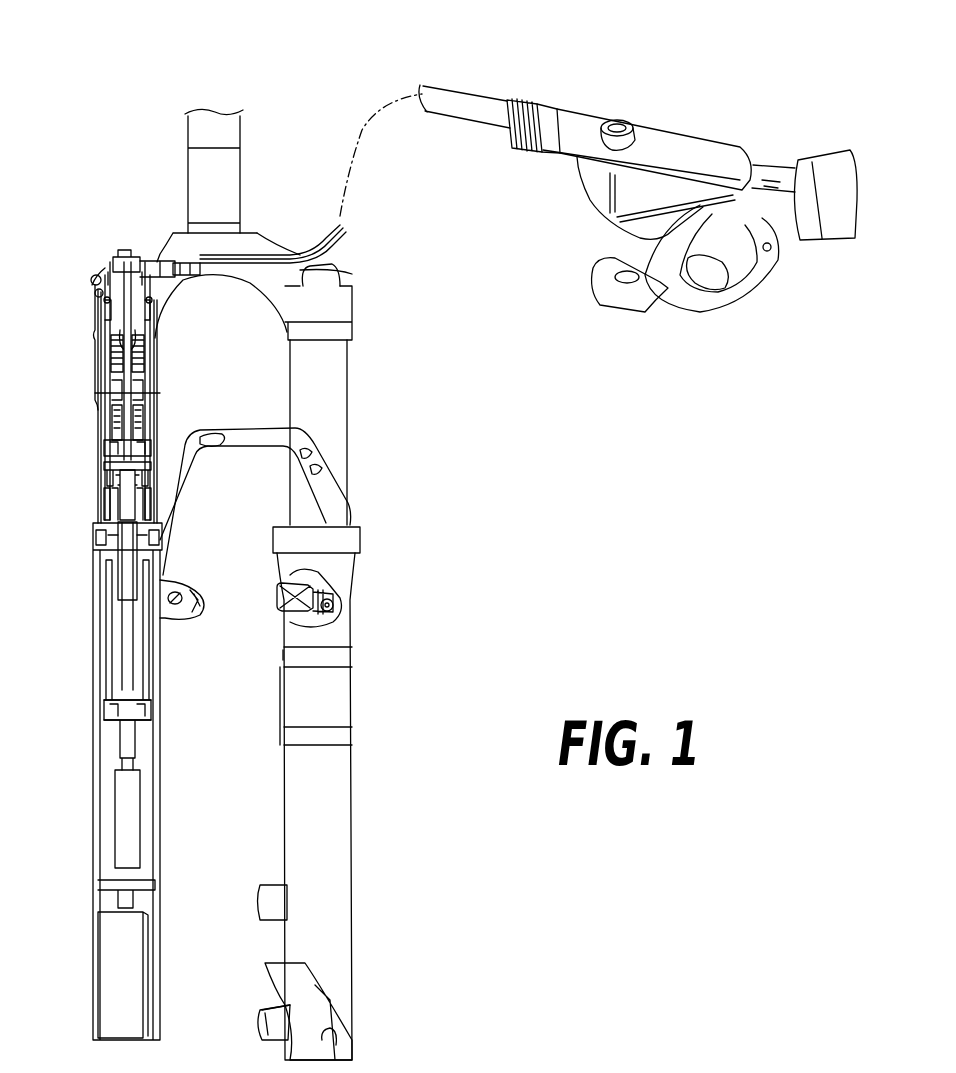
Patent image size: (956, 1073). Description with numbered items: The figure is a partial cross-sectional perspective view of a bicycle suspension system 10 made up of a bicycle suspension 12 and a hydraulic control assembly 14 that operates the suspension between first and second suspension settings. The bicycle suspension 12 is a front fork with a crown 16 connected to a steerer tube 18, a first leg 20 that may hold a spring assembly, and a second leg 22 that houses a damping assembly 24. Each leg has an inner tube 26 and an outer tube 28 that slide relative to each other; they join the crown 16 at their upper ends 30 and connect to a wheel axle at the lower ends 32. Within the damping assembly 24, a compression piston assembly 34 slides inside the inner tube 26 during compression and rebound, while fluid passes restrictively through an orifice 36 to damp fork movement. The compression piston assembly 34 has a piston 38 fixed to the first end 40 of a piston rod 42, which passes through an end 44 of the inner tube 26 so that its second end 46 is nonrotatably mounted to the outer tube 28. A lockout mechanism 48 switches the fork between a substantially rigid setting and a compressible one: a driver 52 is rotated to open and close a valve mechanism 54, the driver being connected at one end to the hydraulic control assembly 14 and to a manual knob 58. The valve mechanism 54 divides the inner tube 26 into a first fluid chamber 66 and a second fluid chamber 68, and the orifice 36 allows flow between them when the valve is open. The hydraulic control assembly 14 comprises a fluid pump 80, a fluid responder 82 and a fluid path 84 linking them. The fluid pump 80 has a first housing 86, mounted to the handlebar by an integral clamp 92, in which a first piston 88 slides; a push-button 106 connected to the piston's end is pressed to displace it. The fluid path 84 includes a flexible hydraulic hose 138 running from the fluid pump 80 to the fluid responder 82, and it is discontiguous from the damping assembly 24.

The bicycle suspension system 10 is at (495, 345).
The bicycle suspension 12 is at (86, 317).
The hydraulic control assembly 14 is at (542, 205).
The crown 16 is at (185, 246).
The steerer tube 18 is at (200, 128).
The first leg 20 is at (390, 596).
The second leg 22 is at (80, 636).
The damping assembly 24 is at (88, 435).
The inner tube 26 is at (160, 381).
The outer tube 28 is at (157, 821).
The upper ends 30 is at (345, 283).
The lower ends 32 is at (92, 1023).
The compression piston assembly 34 is at (92, 504).
The orifice 36 is at (100, 467).
The piston 38 is at (105, 509).
The first end 40 is at (128, 516).
The piston rod 42 is at (134, 668).
The end 44 is at (150, 739).
The second end 46 is at (125, 863).
The lockout mechanism 48 is at (92, 361).
The driver 52 is at (165, 356).
The valve mechanism 54 is at (172, 425).
The manual knob 58 is at (126, 256).
The first fluid chamber 66 is at (102, 413).
The second fluid chamber 68 is at (145, 461).
The fluid pump 80 is at (682, 122).
The fluid responder 82 is at (143, 241).
The fluid path 84 is at (348, 162).
The first housing 86 is at (573, 130).
The first piston 88 is at (762, 172).
The clamp 92 is at (740, 311).
The push-button 106 is at (818, 168).
The hydraulic hose 138 is at (298, 258).